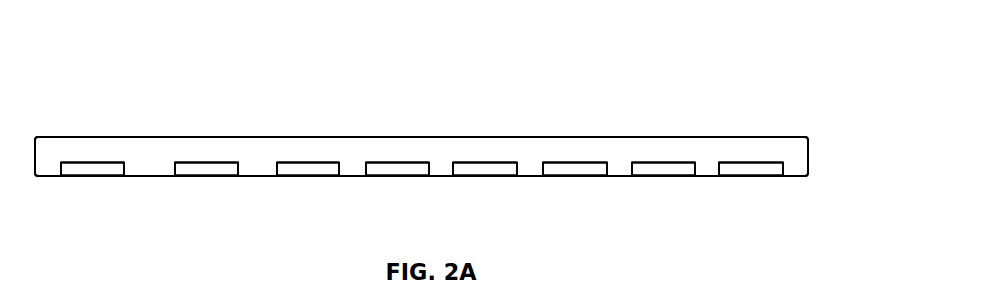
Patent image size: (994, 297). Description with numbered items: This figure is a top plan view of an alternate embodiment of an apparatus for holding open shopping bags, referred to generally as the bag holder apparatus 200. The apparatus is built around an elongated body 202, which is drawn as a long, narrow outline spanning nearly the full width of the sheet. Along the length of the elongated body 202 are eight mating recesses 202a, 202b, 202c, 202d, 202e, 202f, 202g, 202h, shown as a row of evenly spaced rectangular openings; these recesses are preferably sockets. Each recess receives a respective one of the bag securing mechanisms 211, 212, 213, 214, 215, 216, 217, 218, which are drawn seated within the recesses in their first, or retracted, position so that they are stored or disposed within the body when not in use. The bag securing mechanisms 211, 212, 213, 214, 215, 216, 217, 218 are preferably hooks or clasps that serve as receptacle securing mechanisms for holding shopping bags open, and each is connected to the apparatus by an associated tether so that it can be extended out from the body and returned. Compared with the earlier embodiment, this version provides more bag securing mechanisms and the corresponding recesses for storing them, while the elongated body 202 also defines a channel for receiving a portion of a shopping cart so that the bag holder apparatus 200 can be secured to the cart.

The bag holder apparatus 200 is at (764, 54).
The elongated body 202 is at (800, 163).
The recess 202a is at (90, 150).
The recess 202b is at (210, 150).
The recess 202c is at (310, 150).
The recess 202d is at (401, 150).
The recess 202e is at (492, 150).
The recess 202f is at (577, 150).
The recess 202g is at (665, 150).
The recess 202h is at (757, 150).
The bag securing mechanism 211 is at (93, 173).
The bag securing mechanism 212 is at (213, 173).
The bag securing mechanism 213 is at (308, 173).
The bag securing mechanism 214 is at (412, 173).
The bag securing mechanism 215 is at (488, 173).
The bag securing mechanism 216 is at (592, 173).
The bag securing mechanism 217 is at (668, 173).
The bag securing mechanism 218 is at (760, 173).